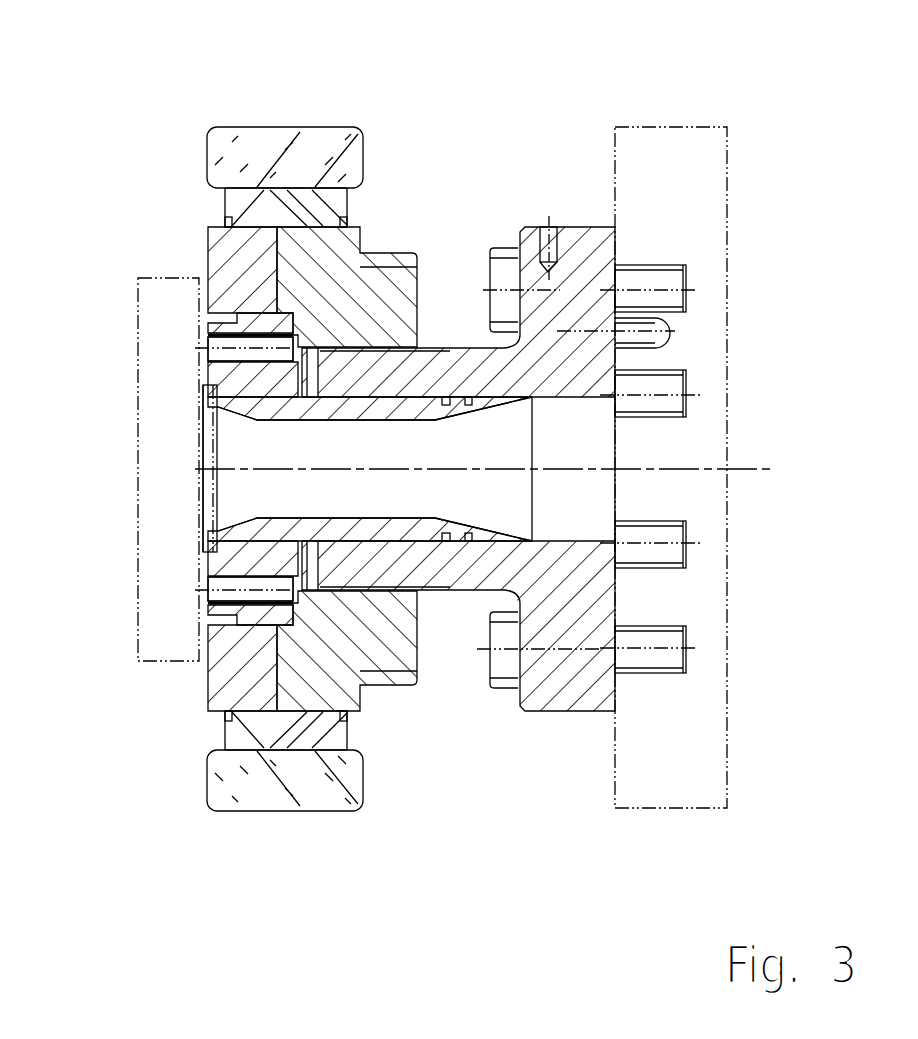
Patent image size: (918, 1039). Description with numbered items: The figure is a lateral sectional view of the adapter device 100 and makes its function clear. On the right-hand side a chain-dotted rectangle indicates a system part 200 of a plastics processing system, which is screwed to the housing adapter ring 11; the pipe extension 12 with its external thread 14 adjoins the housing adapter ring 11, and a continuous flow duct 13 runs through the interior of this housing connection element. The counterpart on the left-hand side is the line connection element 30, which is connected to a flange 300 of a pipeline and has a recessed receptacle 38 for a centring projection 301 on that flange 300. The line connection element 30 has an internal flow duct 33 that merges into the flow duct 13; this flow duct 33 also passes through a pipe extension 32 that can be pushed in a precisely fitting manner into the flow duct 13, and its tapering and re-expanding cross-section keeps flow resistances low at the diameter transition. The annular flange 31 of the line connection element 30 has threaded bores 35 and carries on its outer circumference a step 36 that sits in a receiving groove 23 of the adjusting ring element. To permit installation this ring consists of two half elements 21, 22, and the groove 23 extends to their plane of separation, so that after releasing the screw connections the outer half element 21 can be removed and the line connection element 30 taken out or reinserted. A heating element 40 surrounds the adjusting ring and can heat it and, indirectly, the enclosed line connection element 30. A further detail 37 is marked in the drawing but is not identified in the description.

The adapter device 100 is at (147, 96).
The system part 200 is at (710, 127).
The flange 300 is at (163, 662).
The heating element 40 is at (260, 150).
The receiving groove 23 is at (263, 628).
The outer half element 21 is at (248, 262).
The half element 22 is at (353, 290).
The threaded bores 35 is at (227, 343).
The step 36 is at (253, 311).
The annular flange 31 is at (208, 377).
The line connection element 30 is at (250, 469).
The pipe extension 32 is at (378, 528).
The internal flow duct 33 is at (253, 448).
The recessed receptacle 38 is at (203, 518).
The centring projection 301 is at (203, 498).
The external thread 14 is at (425, 348).
The pin / retaining element 37 is at (470, 545).
The housing adapter ring 11 is at (582, 267).
The continuous flow duct 13 is at (568, 487).
The pipe extension 12 is at (478, 365).